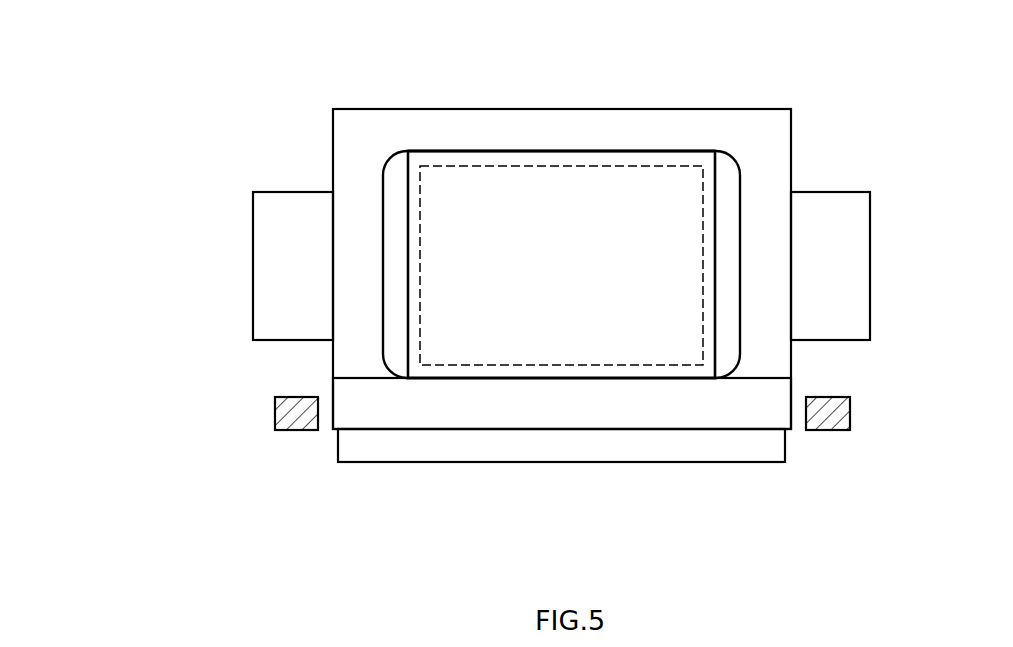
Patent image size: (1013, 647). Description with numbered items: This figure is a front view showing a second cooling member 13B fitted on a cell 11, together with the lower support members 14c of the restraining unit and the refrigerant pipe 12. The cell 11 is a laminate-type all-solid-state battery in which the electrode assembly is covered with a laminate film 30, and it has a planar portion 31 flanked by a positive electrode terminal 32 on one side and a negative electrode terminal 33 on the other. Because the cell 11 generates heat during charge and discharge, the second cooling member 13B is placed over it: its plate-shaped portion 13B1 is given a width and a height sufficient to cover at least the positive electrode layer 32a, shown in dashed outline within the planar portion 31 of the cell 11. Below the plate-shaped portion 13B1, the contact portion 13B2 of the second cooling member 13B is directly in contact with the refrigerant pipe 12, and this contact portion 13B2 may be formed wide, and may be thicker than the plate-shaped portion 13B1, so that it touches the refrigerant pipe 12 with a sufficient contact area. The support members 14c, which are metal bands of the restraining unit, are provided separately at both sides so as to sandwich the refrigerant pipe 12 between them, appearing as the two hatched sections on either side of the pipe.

The cell 11 is at (557, 276).
The refrigerant pipe 12 is at (452, 425).
The second cooling member 13B is at (720, 235).
The plate-shaped portion 13B1 is at (655, 152).
The contact portion 13B2 is at (761, 378).
The support member 14c is at (278, 413).
The laminate film 30 is at (743, 127).
The planar portion 31 is at (392, 280).
The positive electrode terminal 32 is at (288, 192).
The positive electrode layer 32a is at (592, 163).
The negative electrode terminal 33 is at (848, 192).